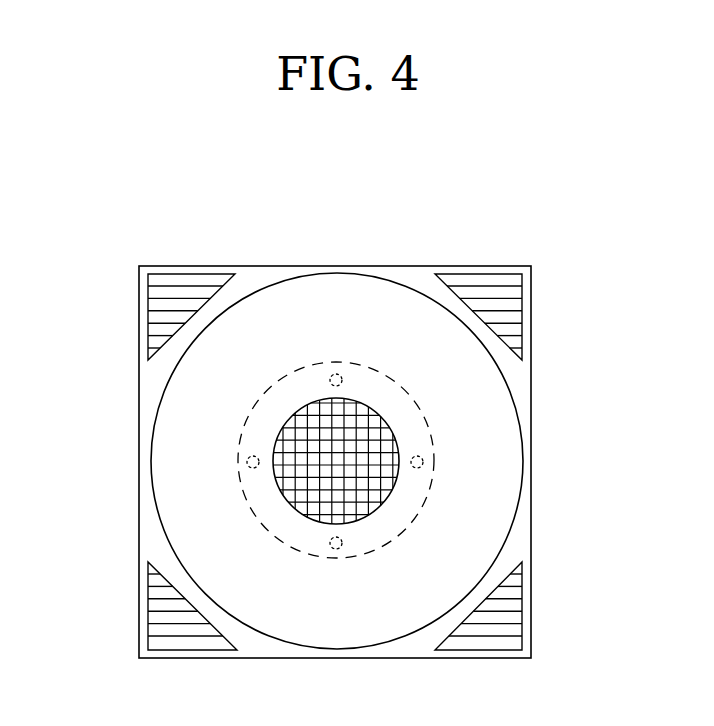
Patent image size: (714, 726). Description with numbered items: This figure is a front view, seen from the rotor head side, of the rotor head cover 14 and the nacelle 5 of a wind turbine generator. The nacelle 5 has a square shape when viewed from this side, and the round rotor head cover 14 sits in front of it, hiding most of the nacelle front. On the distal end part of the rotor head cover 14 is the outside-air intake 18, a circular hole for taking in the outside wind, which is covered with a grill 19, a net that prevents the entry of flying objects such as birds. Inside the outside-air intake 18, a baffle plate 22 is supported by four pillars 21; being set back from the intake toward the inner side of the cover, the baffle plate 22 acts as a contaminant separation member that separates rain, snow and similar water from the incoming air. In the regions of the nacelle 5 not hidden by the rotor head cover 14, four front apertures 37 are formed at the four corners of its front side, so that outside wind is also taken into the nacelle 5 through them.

The nacelle 5 is at (250, 266).
The rotor head cover 14 is at (337, 297).
The outside-air intake 18 is at (290, 443).
The grill 19 is at (313, 476).
The pillars 21 is at (340, 378).
The baffle plate 22 is at (418, 398).
The front apertures 37 is at (150, 308).